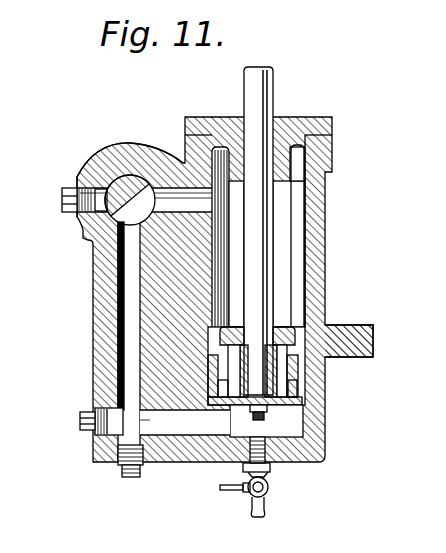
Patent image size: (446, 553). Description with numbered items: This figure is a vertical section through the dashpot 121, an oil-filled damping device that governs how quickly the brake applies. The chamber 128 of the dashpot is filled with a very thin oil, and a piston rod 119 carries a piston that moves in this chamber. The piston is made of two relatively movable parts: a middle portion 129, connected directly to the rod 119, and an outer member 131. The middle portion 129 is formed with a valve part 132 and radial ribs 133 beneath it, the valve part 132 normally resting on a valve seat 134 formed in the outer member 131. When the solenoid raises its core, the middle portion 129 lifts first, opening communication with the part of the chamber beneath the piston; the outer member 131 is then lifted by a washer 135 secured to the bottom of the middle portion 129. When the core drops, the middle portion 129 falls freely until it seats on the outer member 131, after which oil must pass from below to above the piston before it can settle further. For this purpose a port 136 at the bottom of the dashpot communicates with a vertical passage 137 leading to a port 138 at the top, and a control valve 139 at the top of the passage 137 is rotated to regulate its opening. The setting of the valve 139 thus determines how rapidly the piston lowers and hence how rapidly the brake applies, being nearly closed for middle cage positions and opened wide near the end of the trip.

The piston rod 119 is at (262, 93).
The dashpot 121 is at (325, 272).
The chamber 128 is at (303, 256).
The middle portion of piston 129 is at (273, 327).
The outer member of piston 131 is at (310, 376).
The valve part 132 is at (223, 340).
The radial ribs 133 is at (283, 353).
The valve seat 134 is at (213, 387).
The washer 135 is at (262, 412).
The port 136 is at (190, 428).
The vertical passage 137 is at (128, 298).
The port 138 is at (183, 158).
The control valve 139 is at (117, 178).